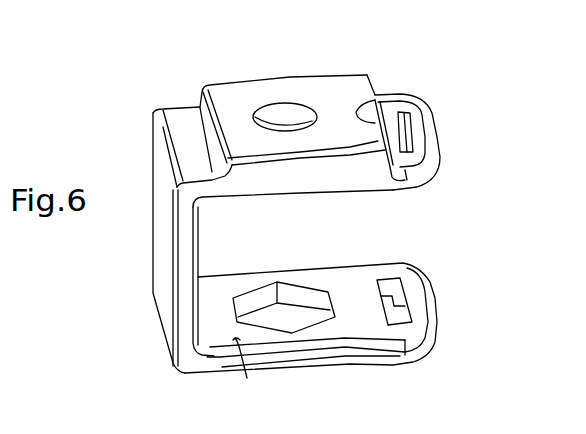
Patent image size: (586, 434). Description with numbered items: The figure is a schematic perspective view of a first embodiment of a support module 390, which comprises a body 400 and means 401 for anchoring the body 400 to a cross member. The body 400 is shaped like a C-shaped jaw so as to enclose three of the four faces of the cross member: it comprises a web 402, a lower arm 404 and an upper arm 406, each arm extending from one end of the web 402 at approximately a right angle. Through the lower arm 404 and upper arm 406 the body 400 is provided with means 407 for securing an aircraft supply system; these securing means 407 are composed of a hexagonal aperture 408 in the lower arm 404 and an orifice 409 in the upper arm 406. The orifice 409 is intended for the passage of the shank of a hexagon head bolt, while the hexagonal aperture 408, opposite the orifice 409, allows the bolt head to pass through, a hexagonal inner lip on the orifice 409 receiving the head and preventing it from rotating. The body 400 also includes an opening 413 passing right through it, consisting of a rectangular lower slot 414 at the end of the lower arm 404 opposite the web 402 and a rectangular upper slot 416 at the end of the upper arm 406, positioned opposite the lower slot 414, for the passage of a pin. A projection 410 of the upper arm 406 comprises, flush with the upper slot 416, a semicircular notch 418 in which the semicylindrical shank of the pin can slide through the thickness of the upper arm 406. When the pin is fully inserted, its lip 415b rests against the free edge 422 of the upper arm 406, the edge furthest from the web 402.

The support module 390 is at (290, 216).
The body 400 is at (290, 230).
The means for anchoring 401 is at (327, 118).
The web 402 is at (156, 265).
The lower arm 404 is at (243, 348).
The upper arm 406 is at (190, 127).
The means for securing an aircraft supply system 407 is at (358, 325).
The hexagonal aperture 408 is at (298, 315).
The orifice 409 is at (283, 127).
The projection 410 is at (320, 95).
The opening 413 is at (440, 249).
The lower slot 414 is at (402, 304).
The lip 415b is at (57, 423).
The upper slot 416 is at (420, 128).
The semicircular notch 418 is at (371, 80).
The free edge 422 is at (405, 128).